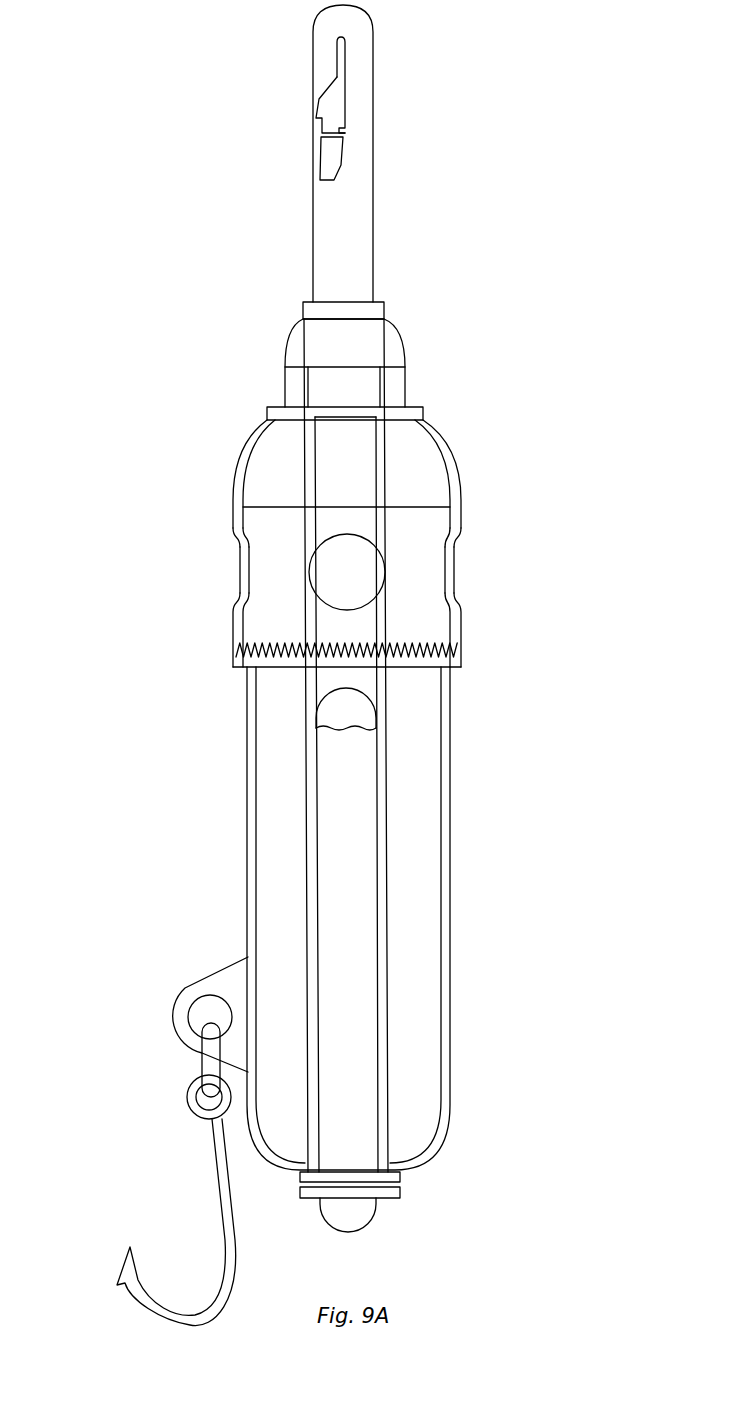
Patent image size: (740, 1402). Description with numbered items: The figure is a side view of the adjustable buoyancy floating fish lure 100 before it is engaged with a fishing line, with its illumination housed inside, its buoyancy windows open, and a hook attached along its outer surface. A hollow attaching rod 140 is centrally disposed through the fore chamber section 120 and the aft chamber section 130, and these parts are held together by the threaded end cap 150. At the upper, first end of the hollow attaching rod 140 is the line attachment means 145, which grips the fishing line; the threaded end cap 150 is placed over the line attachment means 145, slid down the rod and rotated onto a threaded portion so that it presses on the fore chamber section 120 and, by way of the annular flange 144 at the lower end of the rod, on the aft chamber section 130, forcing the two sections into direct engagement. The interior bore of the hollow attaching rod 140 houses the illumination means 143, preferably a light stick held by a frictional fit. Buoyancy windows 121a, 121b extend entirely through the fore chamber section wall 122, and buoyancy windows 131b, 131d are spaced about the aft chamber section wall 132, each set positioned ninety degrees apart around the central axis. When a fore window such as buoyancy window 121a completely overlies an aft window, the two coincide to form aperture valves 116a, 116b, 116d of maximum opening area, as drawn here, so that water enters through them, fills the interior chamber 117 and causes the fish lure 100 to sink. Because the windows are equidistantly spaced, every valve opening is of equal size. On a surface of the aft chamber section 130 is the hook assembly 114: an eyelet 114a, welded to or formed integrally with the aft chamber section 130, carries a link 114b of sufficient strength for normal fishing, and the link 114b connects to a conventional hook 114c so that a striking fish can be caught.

The adjustable buoyancy floating fish lure 100 is at (190, 353).
The line attachment means 145 is at (287, 100).
The hollow attaching rod 140 is at (353, 182).
The threaded end cap 150 is at (400, 347).
The fore chamber section wall 122 is at (428, 430).
The fore chamber section 120 is at (215, 473).
The aperture valve 116a is at (360, 540).
The buoyancy window 121a is at (238, 555).
The buoyancy window 121b is at (455, 556).
The aperture valve 116d is at (222, 578).
The aperture valve 116b is at (470, 578).
The buoyancy window 131d is at (250, 595).
The buoyancy window 131b is at (447, 595).
The aft chamber section 130 is at (227, 778).
The interior chamber 117 is at (415, 795).
The illumination means 143 is at (355, 935).
The aft chamber section wall 132 is at (432, 1133).
The annular flange 144 is at (400, 1172).
The hook assembly 114 is at (180, 1012).
The eyelet 114a is at (208, 1000).
The link 114b is at (207, 1063).
The hook 114c is at (125, 1270).